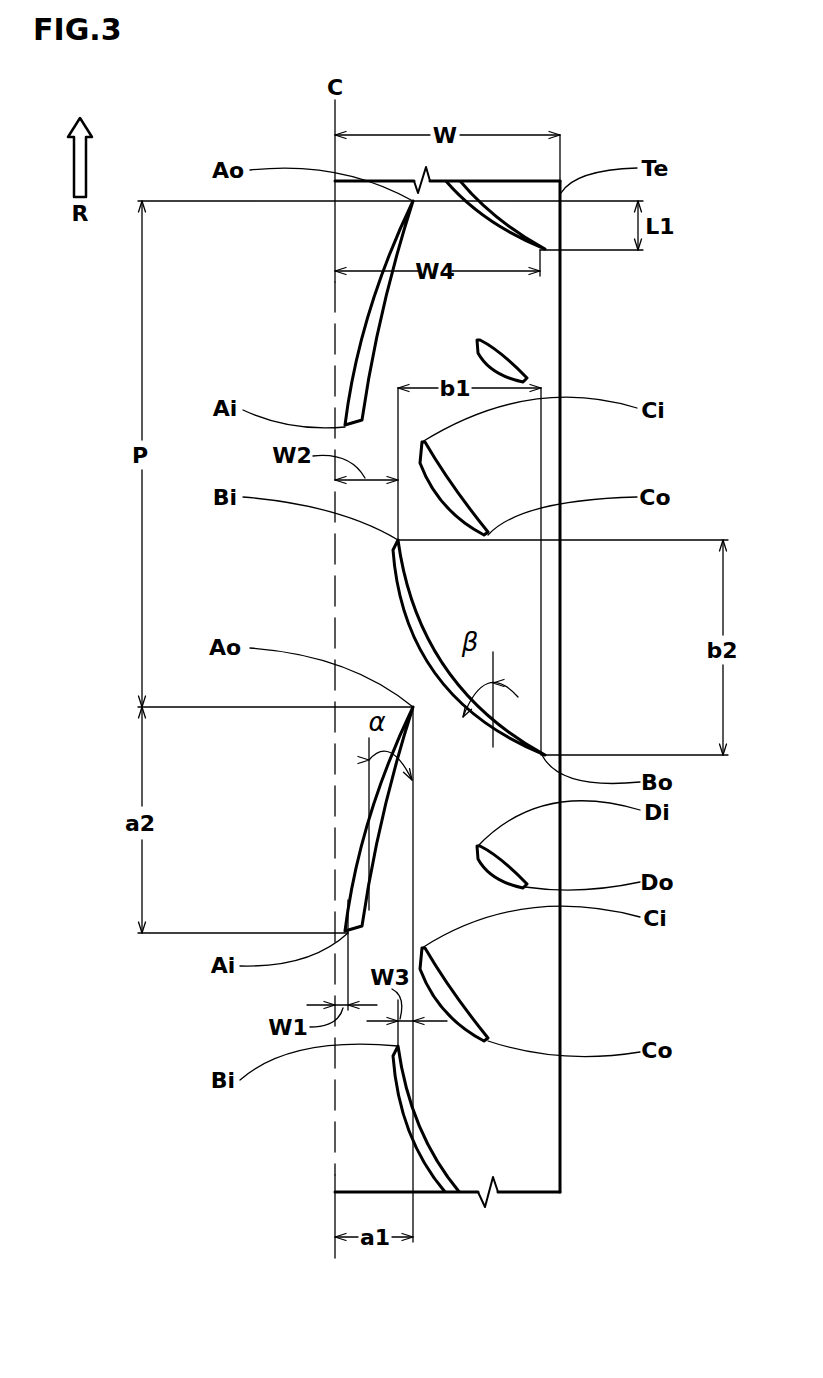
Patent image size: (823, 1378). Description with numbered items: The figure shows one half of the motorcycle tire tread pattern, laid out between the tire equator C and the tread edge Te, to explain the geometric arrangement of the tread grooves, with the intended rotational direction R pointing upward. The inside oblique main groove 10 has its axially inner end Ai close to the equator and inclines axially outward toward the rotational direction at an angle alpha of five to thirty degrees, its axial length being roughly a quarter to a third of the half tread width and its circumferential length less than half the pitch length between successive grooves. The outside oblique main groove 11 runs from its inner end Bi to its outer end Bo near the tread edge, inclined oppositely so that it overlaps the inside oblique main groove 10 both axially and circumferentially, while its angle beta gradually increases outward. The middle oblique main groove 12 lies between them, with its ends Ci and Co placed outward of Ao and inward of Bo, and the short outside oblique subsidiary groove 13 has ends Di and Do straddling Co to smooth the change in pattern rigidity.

The inside oblique main groove 10 is at (368, 305).
The outside oblique main groove 11 is at (408, 620).
The middle oblique main groove 12 is at (455, 490).
The outside oblique subsidiary groove 13 is at (505, 357).